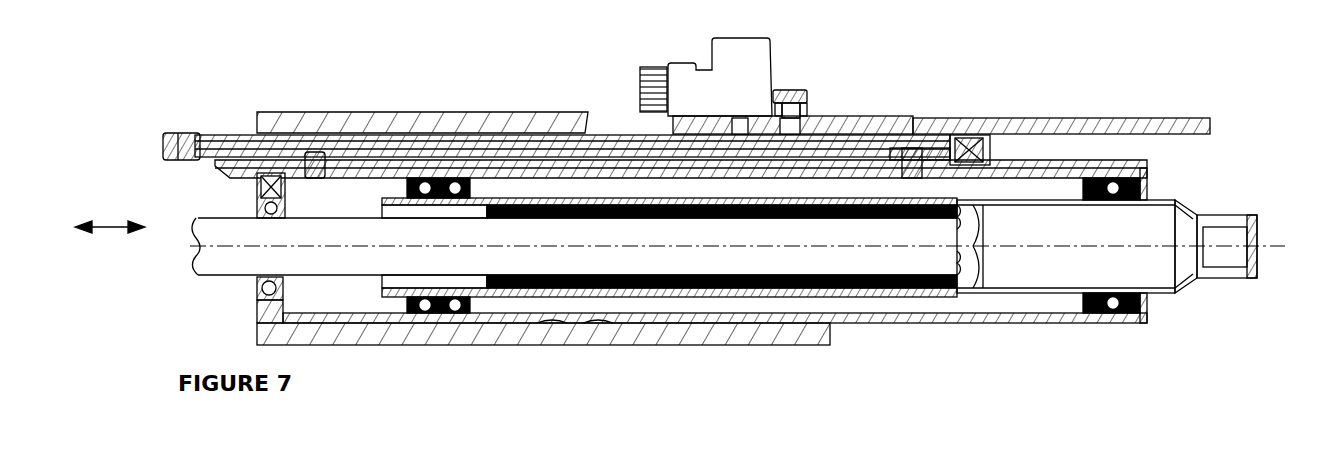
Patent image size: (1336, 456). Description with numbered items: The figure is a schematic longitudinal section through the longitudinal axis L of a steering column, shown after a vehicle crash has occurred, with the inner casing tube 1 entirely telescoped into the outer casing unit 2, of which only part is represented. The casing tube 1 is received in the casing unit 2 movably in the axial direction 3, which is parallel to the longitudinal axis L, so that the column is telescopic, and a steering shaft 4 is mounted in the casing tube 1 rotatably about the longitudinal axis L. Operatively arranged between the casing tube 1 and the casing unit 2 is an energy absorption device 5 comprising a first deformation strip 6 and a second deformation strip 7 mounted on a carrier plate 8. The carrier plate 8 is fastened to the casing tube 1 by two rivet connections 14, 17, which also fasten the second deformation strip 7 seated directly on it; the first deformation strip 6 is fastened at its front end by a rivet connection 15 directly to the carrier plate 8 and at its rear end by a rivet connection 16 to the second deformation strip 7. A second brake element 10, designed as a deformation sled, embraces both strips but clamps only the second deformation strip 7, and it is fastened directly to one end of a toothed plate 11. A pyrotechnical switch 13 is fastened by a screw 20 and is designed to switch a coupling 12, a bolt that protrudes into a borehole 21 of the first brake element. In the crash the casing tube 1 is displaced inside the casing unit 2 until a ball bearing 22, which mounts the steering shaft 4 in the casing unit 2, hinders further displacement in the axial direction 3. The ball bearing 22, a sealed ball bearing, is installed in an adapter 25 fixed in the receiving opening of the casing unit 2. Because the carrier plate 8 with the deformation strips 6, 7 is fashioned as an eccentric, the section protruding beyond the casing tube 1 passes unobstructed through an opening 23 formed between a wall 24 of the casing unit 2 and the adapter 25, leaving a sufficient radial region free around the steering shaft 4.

The inner casing tube 1 is at (1053, 324).
The outer casing unit 2 is at (400, 122).
The axial direction 3 is at (102, 226).
The steering shaft 4 is at (200, 262).
The energy absorption device 5 is at (892, 104).
The first deformation strip 6 is at (472, 150).
The second deformation strip 7 is at (508, 160).
The carrier plate 8 is at (547, 167).
The second brake element 10 is at (878, 128).
The toothed plate 11 is at (1142, 118).
The coupling 12 is at (738, 124).
The pyrotechnical switch 13 is at (751, 62).
The rivet connection 14 is at (313, 163).
The rivet connection 15 is at (192, 147).
The rivet connection 16 is at (966, 136).
The rivet connection 17 is at (907, 150).
The screw 20 is at (790, 117).
The borehole 21 is at (757, 122).
The ball bearing 22 is at (256, 288).
The opening 23 is at (266, 140).
The wall 24 is at (293, 150).
The adapter 25 is at (256, 184).
The longitudinal axis L is at (1274, 248).